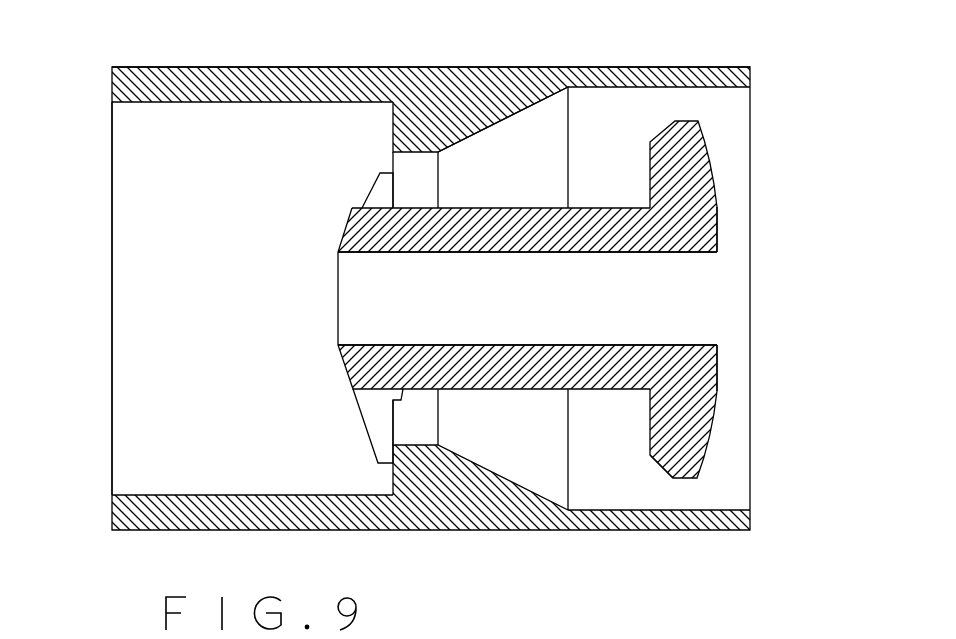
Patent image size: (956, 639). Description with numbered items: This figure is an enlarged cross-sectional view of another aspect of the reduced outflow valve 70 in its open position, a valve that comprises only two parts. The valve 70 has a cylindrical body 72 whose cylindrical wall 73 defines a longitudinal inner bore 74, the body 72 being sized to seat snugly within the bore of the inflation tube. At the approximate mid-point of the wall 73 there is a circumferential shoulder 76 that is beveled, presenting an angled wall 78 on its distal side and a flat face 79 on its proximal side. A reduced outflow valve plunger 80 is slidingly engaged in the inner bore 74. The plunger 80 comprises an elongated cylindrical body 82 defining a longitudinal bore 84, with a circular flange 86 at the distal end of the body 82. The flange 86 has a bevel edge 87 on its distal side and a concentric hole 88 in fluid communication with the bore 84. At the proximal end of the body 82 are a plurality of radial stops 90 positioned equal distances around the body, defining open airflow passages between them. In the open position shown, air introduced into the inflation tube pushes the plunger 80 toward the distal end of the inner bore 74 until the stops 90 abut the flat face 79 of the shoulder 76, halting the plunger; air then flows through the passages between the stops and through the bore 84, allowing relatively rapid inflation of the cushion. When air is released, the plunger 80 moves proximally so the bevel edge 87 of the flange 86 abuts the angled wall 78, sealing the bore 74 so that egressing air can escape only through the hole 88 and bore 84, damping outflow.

The reduced outflow valve 70 is at (347, 45).
The cylindrical body 72 is at (209, 63).
The cylindrical wall 73 is at (590, 75).
The longitudinal inner bore 74 is at (180, 341).
The circumferential shoulder 76 is at (437, 100).
The angled wall 78 is at (513, 110).
The flat face 79 is at (393, 133).
The reduced outflow valve plunger 80 is at (720, 453).
The elongated cylindrical body 82 is at (520, 395).
The longitudinal bore 84 is at (676, 304).
The circular flange 86 is at (704, 150).
The bevel edge 87 is at (660, 465).
The concentric hole 88 is at (720, 267).
The radial stops 90 is at (382, 443).